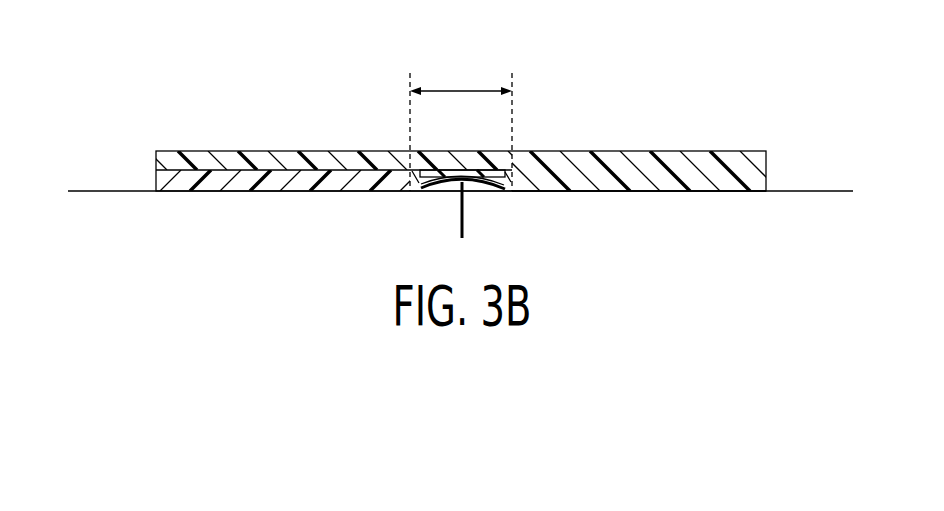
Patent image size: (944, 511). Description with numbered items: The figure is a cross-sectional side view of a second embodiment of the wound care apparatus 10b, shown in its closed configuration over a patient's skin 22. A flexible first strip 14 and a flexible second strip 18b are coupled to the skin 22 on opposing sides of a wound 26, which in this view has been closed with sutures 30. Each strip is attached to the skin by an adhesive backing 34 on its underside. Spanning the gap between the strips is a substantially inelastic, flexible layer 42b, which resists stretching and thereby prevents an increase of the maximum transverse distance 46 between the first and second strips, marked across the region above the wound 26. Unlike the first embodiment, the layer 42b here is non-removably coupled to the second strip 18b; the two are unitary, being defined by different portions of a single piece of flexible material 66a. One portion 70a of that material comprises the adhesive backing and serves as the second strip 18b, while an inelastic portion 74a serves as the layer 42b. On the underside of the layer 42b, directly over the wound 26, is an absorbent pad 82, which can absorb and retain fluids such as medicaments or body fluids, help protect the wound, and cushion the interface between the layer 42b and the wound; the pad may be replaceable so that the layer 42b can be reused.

The wound care apparatus 10b is at (157, 115).
The first strip 14 is at (178, 183).
The second strip 18b is at (633, 160).
The skin 22 is at (820, 190).
The wound 26 is at (438, 215).
The sutures 30 is at (481, 192).
The adhesive backing 34 is at (637, 193).
The layer 42b is at (229, 160).
The maximum transverse distance 46 is at (466, 90).
The single piece of flexible material 66a is at (568, 85).
The portion comprising an adhesive backing 70a is at (731, 160).
The inelastic portion 74a is at (316, 160).
The absorbent pad 82 is at (436, 163).